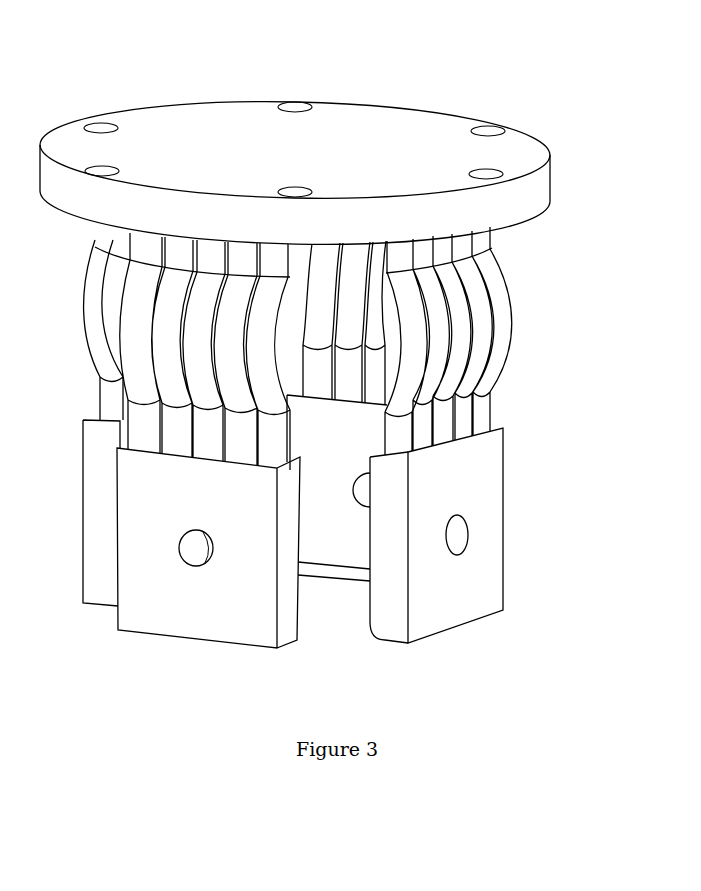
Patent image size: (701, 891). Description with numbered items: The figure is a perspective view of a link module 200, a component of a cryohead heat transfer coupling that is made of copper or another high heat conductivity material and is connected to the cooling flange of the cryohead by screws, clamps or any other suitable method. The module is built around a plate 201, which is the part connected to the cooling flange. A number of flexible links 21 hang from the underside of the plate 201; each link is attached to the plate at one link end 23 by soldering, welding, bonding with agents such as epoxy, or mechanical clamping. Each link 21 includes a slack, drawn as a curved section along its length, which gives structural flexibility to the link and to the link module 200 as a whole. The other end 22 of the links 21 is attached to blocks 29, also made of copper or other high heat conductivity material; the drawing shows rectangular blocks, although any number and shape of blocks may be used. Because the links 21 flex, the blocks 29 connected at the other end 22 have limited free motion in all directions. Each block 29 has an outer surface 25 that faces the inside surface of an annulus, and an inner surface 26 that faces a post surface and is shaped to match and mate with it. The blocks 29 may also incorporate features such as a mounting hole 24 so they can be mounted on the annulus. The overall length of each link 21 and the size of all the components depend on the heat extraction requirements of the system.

The link module 200 is at (522, 104).
The plate 201 is at (540, 128).
The link end 23 is at (477, 233).
The flexible link 21 is at (500, 310).
The other end of link 22 is at (482, 415).
The mounting hole 24 is at (465, 528).
The outer surface 25 is at (324, 558).
The inner surface 26 is at (345, 538).
The block 29 is at (390, 590).